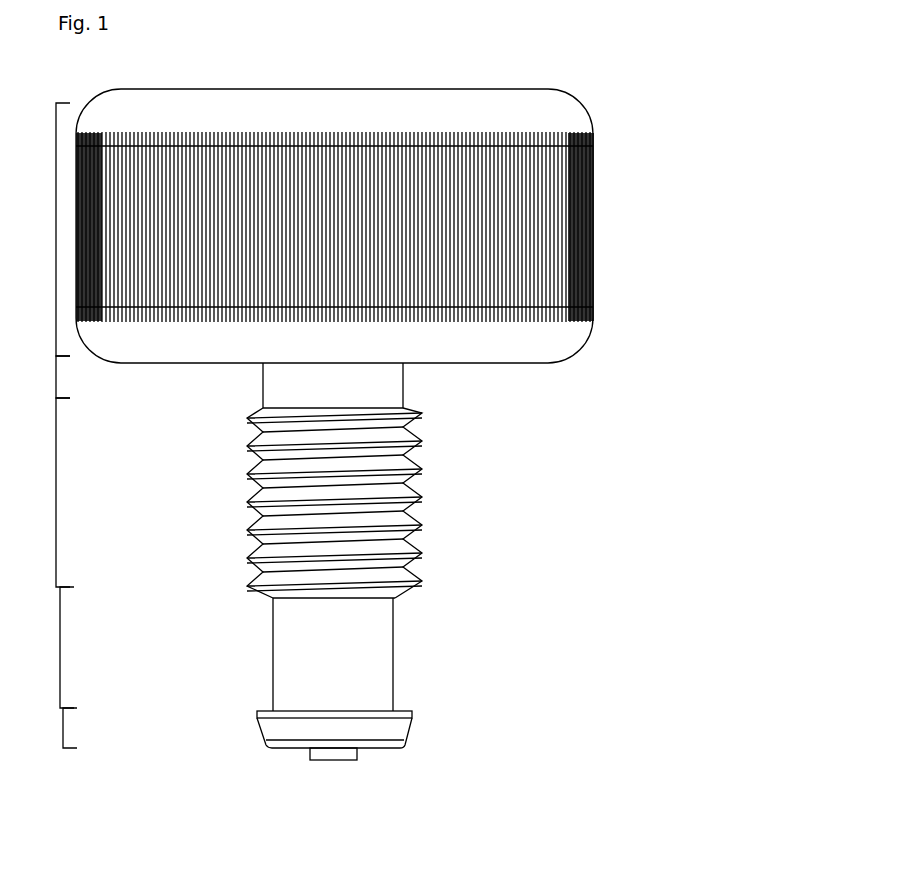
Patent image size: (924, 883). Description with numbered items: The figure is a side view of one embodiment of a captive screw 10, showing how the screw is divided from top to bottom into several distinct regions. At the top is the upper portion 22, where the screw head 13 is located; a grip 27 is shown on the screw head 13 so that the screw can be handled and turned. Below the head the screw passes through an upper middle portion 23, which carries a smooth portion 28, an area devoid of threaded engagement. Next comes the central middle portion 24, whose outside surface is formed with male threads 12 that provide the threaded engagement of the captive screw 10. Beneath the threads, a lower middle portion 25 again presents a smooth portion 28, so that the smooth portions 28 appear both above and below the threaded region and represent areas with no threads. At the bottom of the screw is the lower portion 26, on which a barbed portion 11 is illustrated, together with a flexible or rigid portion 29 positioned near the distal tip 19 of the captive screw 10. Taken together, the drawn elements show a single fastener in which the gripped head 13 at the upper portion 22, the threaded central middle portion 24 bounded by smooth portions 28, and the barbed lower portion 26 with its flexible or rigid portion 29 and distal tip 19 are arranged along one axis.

The captive screw 10 is at (794, 94).
The barbed portion 11 is at (400, 730).
The male threads 12 is at (398, 422).
The screw head 13 is at (543, 103).
The distal tip 19 is at (337, 760).
The upper portion 22 is at (56, 230).
The upper middle portion 23 is at (56, 377).
The central middle portion 24 is at (56, 493).
The lower middle portion 25 is at (60, 648).
The lower portion 26 is at (63, 730).
The grip 27 is at (593, 231).
The smooth portions 28 is at (372, 395).
The flexible or rigid portion 29 is at (408, 715).